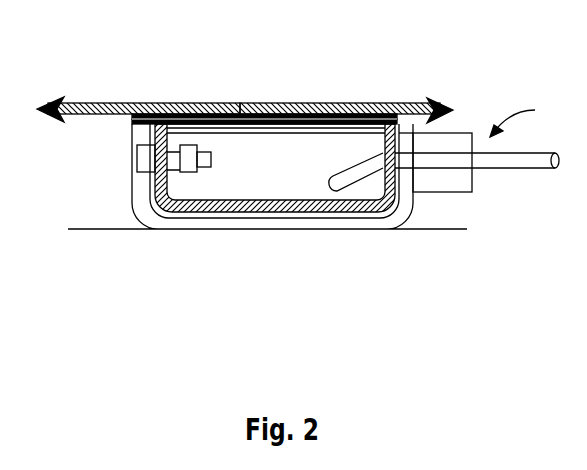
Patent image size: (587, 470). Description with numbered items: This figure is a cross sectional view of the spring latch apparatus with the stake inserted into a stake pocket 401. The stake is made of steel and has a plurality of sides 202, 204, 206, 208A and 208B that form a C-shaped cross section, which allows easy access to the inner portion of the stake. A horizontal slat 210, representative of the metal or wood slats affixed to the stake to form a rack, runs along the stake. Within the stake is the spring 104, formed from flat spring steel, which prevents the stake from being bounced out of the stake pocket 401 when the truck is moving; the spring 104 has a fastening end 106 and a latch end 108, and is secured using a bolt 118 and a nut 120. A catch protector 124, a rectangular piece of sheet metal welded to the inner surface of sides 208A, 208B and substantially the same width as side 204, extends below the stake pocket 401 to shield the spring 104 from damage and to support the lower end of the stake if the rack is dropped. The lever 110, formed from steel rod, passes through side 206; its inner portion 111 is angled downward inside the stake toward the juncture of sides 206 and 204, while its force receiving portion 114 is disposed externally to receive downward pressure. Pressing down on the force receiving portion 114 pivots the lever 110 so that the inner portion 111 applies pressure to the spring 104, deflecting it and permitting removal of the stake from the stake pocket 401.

The spring 104 is at (237, 165).
The fastening end 106 is at (163, 218).
The latch end 108 is at (469, 178).
The lever 110 is at (531, 117).
The inner portion 111 is at (350, 190).
The force receiving portion 114 is at (523, 160).
The bolt 118 is at (141, 157).
The nut 120 is at (187, 162).
The catch protector 124 is at (290, 103).
The side 202 is at (130, 103).
The side 204 is at (258, 212).
The side 206 is at (393, 103).
The side 208A is at (175, 103).
The side 208B is at (345, 103).
The horizontal slat 210 is at (261, 103).
The stake pocket 401 is at (132, 203).